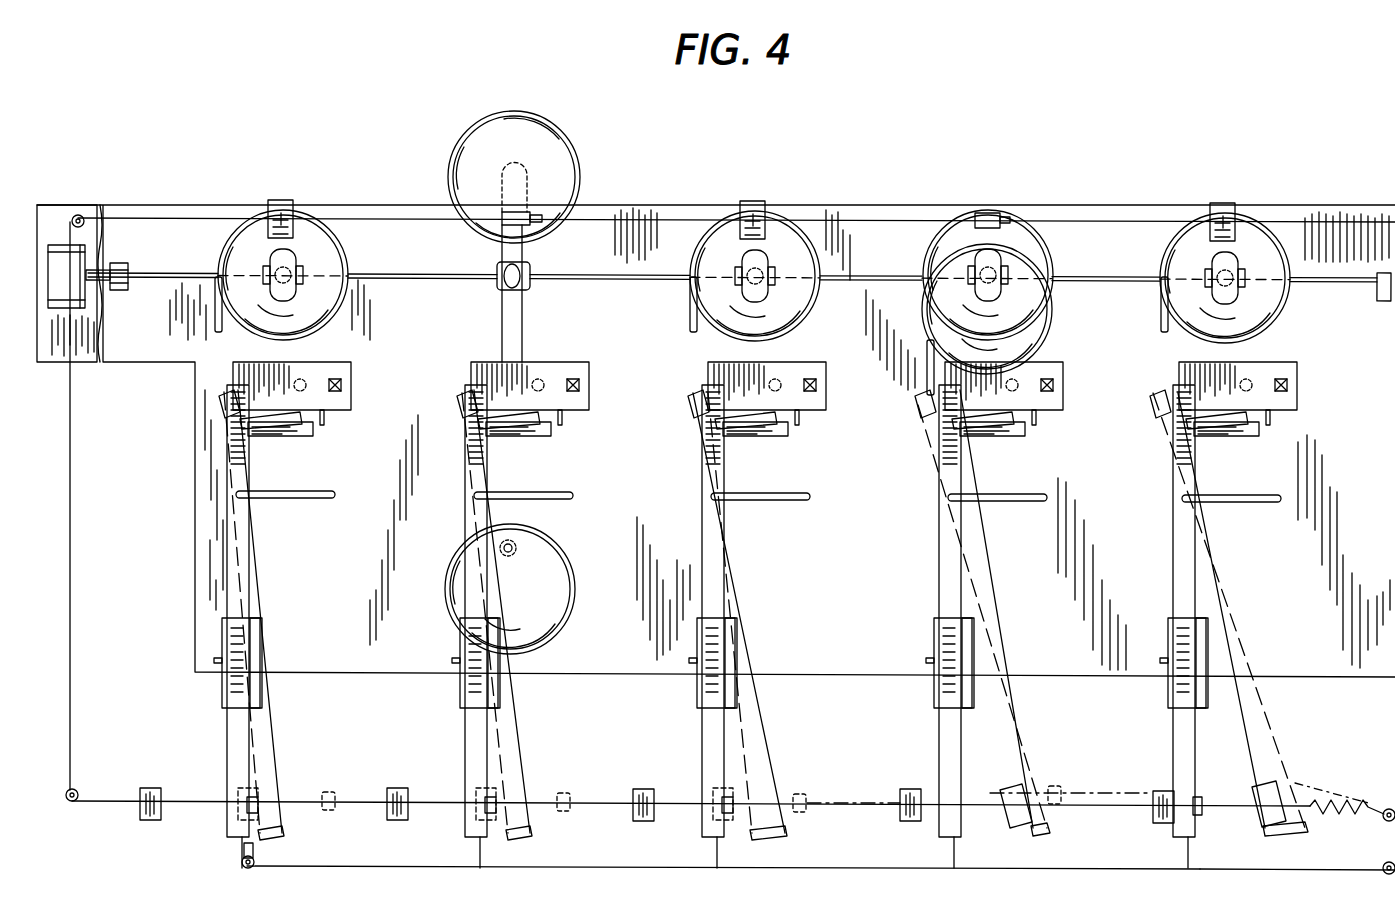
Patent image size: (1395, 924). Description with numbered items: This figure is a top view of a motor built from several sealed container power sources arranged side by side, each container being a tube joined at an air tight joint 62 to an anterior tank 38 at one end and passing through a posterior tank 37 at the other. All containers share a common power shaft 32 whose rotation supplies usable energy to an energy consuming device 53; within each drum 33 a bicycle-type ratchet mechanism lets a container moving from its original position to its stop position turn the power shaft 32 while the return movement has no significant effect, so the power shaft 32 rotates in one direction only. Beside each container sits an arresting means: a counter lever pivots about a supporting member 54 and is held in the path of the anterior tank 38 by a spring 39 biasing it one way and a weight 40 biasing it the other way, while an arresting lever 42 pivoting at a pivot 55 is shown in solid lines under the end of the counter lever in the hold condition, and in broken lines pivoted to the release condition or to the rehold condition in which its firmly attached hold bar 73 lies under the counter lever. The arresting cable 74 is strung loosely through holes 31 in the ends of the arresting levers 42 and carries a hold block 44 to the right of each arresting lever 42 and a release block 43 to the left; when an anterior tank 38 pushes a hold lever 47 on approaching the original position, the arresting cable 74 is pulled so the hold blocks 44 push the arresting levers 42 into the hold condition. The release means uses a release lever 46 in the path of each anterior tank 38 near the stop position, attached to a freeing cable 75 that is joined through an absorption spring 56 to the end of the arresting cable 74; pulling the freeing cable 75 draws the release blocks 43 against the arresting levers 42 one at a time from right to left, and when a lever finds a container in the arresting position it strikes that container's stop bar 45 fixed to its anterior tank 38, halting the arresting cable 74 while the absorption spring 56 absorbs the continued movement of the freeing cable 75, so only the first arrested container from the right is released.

The holes 31 is at (462, 805).
The power shaft 32 is at (393, 272).
The drum 33 is at (532, 272).
The posterior tank 37 is at (515, 111).
The anterior tank 38 is at (348, 318).
The spring 39 is at (300, 384).
The weight 40 is at (336, 380).
The arresting lever 42 is at (227, 735).
The release block 43 is at (396, 786).
The hold block 44 is at (255, 800).
The stop bar 45 is at (225, 333).
The release lever 46 is at (965, 708).
The hold lever 47 is at (530, 213).
The energy consuming device 53 is at (62, 245).
The supporting member 54 is at (326, 424).
The pivot 55 is at (250, 493).
The absorption spring 56 is at (1340, 812).
The joint 62 is at (128, 268).
The hold bar 73 is at (315, 436).
The arresting cable 74 is at (355, 206).
The freeing cable 75 is at (1318, 870).